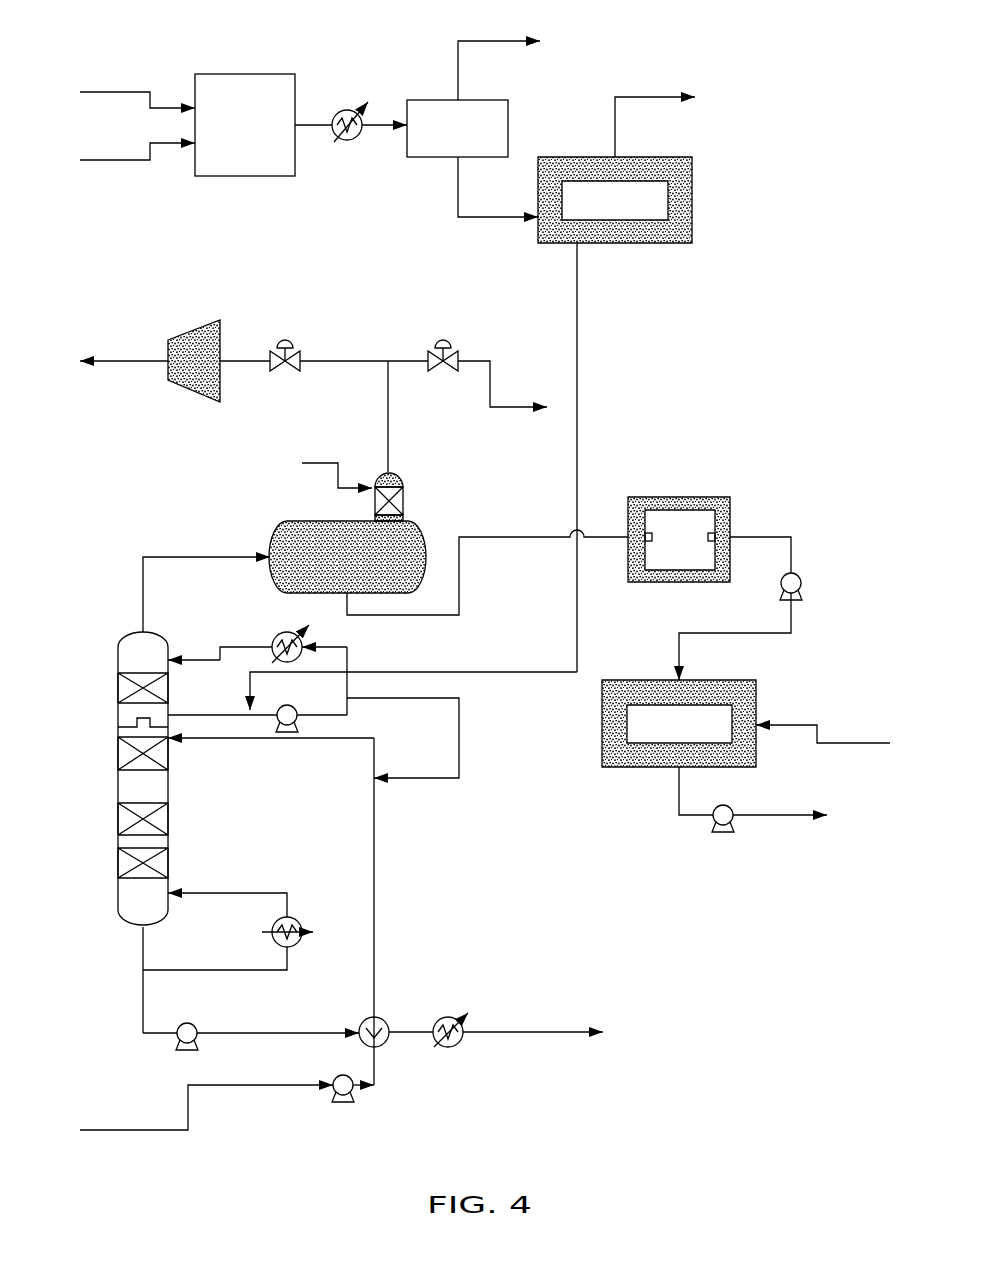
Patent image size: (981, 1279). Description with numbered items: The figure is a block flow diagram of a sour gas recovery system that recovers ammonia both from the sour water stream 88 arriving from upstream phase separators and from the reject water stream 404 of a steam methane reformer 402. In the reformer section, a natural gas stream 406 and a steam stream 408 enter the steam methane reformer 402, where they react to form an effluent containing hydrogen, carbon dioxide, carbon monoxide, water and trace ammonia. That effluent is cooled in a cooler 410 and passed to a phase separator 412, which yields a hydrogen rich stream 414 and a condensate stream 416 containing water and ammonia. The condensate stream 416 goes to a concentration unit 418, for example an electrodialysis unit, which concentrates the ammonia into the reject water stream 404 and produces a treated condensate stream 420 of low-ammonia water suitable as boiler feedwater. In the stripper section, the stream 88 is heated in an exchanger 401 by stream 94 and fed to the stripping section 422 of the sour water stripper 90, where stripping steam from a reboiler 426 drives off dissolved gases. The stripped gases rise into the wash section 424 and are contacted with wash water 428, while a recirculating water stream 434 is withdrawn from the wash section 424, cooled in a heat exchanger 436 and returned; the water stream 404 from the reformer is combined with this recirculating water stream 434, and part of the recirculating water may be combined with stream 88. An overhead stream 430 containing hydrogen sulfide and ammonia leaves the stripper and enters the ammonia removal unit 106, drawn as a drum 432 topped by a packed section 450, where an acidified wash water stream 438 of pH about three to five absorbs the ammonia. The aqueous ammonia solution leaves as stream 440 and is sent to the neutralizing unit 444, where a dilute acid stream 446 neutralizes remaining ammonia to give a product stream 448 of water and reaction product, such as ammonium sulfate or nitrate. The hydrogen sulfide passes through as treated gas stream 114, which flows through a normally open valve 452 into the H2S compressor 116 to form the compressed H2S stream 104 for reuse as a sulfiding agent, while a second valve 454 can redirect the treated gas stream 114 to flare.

The stream 88 is at (97, 1123).
The sour water stripper 90 is at (112, 768).
The stream 94 is at (544, 1012).
The compressed H2S stream 104 is at (114, 353).
The ammonia removal unit 106 is at (400, 478).
The treated gas stream 114 is at (384, 404).
The H2S compressor 116 is at (184, 324).
The exchanger 401 is at (384, 1010).
The steam methane reformer 402 is at (210, 68).
The reject water stream 404 is at (587, 365).
The natural gas stream 406 is at (97, 83).
The steam stream 408 is at (97, 163).
The cooler 410 is at (361, 145).
The phase separator 412 is at (422, 88).
The hydrogen rich stream 414 is at (474, 35).
The condensate stream 416 is at (472, 222).
The concentration unit 418 is at (587, 151).
The treated condensate stream 420 is at (632, 89).
The stripping section 422 is at (716, 495).
The wash section 424 is at (127, 692).
The reboiler 426 is at (296, 908).
The wash water 428 is at (212, 652).
The overhead stream 430 is at (160, 546).
The reflux drum 432 is at (300, 516).
The recirculating water stream 434 is at (176, 715).
The heat exchanger 436 is at (282, 614).
The acidified wash water stream 438 is at (317, 453).
The stream 440 is at (469, 580).
The neutralizing unit 444 is at (716, 678).
The dilute acid stream 446 is at (853, 738).
The product stream 448 is at (778, 820).
The packed section 450 is at (403, 507).
The valve 452 is at (284, 327).
The valve 454 is at (442, 327).